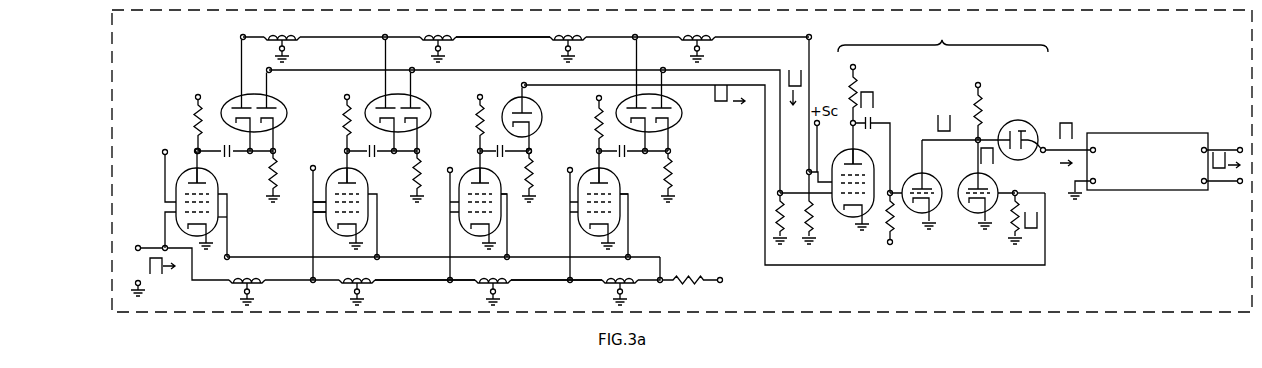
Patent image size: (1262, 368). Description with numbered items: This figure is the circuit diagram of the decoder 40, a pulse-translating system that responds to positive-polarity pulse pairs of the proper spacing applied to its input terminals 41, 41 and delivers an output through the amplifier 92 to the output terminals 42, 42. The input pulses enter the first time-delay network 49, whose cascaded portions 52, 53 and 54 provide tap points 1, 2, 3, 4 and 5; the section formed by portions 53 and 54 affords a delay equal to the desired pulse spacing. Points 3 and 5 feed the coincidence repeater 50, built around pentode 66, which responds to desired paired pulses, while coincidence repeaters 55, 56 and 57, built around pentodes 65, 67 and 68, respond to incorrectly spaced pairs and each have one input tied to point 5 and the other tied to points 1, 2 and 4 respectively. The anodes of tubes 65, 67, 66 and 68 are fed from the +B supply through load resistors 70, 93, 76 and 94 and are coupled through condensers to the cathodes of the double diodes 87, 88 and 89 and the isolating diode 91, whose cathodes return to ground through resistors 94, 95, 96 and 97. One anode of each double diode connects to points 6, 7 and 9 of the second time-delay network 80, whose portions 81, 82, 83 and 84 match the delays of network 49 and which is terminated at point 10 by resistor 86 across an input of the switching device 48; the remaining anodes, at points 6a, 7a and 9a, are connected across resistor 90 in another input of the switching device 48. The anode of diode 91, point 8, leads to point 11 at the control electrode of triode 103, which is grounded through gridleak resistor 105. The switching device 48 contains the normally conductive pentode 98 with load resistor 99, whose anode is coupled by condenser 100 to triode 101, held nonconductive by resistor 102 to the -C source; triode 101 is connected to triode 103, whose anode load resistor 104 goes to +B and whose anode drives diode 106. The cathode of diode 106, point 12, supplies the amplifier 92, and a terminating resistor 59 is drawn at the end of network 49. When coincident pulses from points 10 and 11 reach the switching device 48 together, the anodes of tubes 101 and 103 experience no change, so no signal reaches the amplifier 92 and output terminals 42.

The point 1 is at (163, 246).
The point 2 is at (314, 278).
The point 3 is at (451, 278).
The point 4 is at (571, 278).
The point 5 is at (229, 255).
The point 6 is at (243, 34).
The point 6a is at (269, 68).
The point 7 is at (385, 35).
The point 7a is at (412, 68).
The point 8 is at (523, 85).
The point 9 is at (636, 36).
The point 9a is at (663, 70).
The point 10 is at (811, 38).
The point 11 is at (1026, 182).
The point 12 is at (1044, 146).
The decoder 40 is at (546, 10).
The input terminals 41 is at (137, 251).
The output terminals 42 is at (1241, 147).
The switching device 48 is at (943, 35).
The time-delay network 49 is at (430, 285).
The coincidence repeater 50 is at (498, 188).
The network portion 52 is at (248, 277).
The network portion 53 is at (372, 284).
The network portion 54 is at (505, 277).
The coincidence repeater 55 is at (221, 189).
The coincidence repeater 56 is at (370, 191).
The coincidence repeater 57 is at (609, 178).
The terminating resistor 59 is at (680, 278).
The pentode 65 is at (224, 217).
The pentode 66 is at (501, 215).
The pentode 67 is at (326, 228).
The pentode 68 is at (628, 224).
The load resistor 70 is at (197, 112).
The load resistor 76 is at (478, 120).
The time-delay network 80 is at (513, 32).
The network portion 81 is at (287, 35).
The network portion 82 is at (436, 35).
The network portion 83 is at (576, 36).
The network portion 84 is at (705, 36).
The resistor 86 is at (811, 218).
The double diode 87 is at (287, 112).
The double diode 88 is at (431, 112).
The double diode 89 is at (682, 112).
The resistor 90 is at (777, 222).
The isolating diode 91 is at (540, 110).
The amplifier 92 is at (1157, 132).
The load resistor 93 is at (346, 118).
The resistor 94 is at (275, 178).
The resistor 95 is at (416, 170).
The resistor 96 is at (531, 176).
The resistor 97 is at (670, 180).
The pentode 98 is at (876, 168).
The load resistor 99 is at (856, 87).
The coupling condenser 100 is at (871, 118).
The triode 101 is at (912, 176).
The resistor 102 is at (892, 220).
The triode 103 is at (963, 178).
The anode load resistor 104 is at (980, 102).
The gridleak resistor 105 is at (1012, 225).
The diode 106 is at (1006, 122).